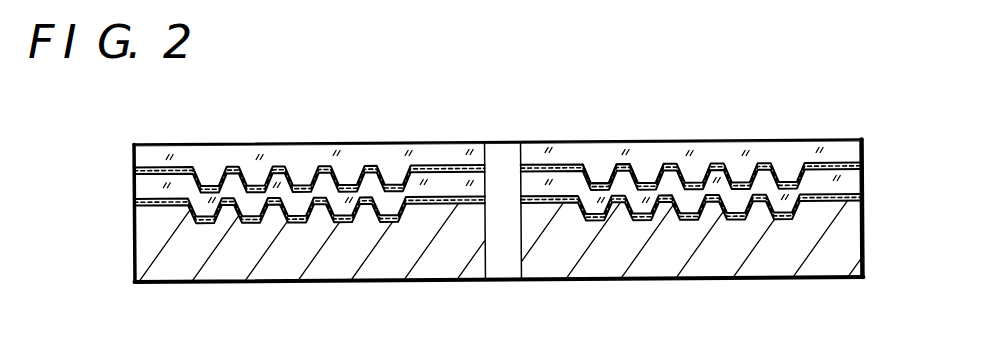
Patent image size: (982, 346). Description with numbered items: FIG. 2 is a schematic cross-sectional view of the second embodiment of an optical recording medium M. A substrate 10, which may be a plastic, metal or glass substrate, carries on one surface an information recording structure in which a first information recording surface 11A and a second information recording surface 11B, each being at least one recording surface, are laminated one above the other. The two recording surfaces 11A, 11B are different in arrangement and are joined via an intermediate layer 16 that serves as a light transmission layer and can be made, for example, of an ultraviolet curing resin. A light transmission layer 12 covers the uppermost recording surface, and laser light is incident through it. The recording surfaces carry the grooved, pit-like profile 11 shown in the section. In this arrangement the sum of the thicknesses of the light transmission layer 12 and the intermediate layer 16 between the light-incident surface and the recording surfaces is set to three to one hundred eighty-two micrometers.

The substrate 10 is at (698, 269).
The grooves 11 is at (638, 165).
The first information recording surface 11A is at (743, 169).
The second information recording surface 11B is at (808, 207).
The light transmission layer 12 is at (570, 148).
The intermediate layer 16 is at (820, 180).
The optical recording medium M is at (347, 328).